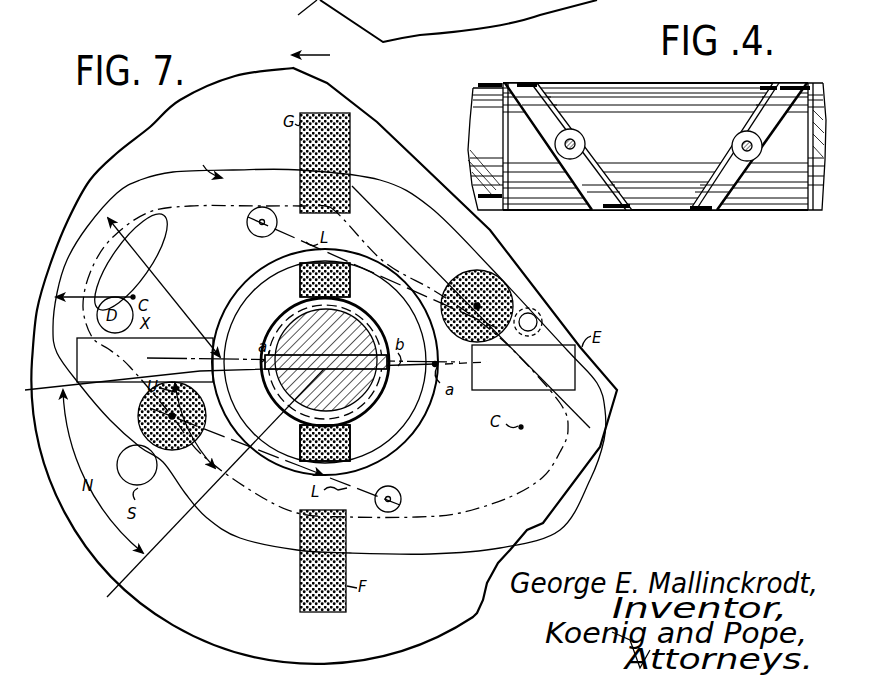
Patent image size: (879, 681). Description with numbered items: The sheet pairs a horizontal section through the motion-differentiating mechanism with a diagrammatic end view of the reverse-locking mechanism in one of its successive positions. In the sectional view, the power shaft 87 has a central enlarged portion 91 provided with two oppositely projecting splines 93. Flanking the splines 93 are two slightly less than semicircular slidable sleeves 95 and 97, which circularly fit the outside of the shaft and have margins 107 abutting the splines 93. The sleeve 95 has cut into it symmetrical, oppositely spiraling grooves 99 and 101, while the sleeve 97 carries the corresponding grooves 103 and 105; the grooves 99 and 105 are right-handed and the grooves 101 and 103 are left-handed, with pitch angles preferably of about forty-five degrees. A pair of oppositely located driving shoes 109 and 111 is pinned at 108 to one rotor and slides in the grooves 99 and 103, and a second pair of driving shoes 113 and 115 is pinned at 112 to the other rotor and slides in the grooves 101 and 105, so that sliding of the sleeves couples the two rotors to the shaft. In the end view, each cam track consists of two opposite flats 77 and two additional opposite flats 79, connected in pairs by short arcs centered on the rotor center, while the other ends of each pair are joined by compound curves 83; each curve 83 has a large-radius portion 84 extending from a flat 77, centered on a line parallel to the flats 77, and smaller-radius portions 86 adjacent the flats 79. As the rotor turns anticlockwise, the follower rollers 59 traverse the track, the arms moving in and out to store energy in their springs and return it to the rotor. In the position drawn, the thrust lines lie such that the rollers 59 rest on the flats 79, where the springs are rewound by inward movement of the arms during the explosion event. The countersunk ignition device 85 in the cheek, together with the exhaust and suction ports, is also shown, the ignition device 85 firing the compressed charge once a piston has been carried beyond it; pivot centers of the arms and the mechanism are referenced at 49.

In FIG. 7, the pivot bearing 49 is at (258, 230).
In FIG. 7, the follower rollers 59 is at (505, 288).
In FIG. 7, the flats 77 is at (278, 178).
In FIG. 7, the additional opposite flats 79 is at (478, 255).
In FIG. 7, the compound curves 83 is at (208, 162).
In FIG. 7, the large-radius portion of compound curve 84 is at (112, 211).
In FIG. 7, the ignition device 85 is at (541, 318).
In FIG. 7, the small-radius portions of compound curve 86 is at (57, 320).
In FIG. 7, the power shaft 87 is at (306, 332).
In FIG. 4, the power shaft 87 is at (487, 143).
In FIG. 7, the central enlarged portion of the shaft 91 is at (282, 327).
In FIG. 4, the central enlarged portion of the shaft 91 is at (480, 105).
In FIG. 7, the splines 93 is at (288, 340).
In FIG. 4, the splines 93 is at (498, 84).
In FIG. 7, the slidable sleeve 95 is at (362, 306).
In FIG. 4, the slidable sleeve 95 is at (668, 141).
In FIG. 7, the slidable sleeve 97 is at (380, 386).
In FIG. 7, the spiraling groove 99 is at (372, 312).
In FIG. 4, the spiraling groove 99 is at (546, 123).
In FIG. 7, the spiraling groove 101 is at (349, 361).
In FIG. 4, the spiraling groove 101 is at (784, 124).
In FIG. 7, the spiraling groove 103 is at (350, 424).
In FIG. 7, the spiraling groove 105 is at (357, 443).
In FIG. 7, the margins 107 is at (389, 346).
In FIG. 4, the pin 108 is at (577, 147).
In FIG. 7, the driving shoe 109 is at (305, 289).
In FIG. 4, the driving shoe 109 is at (572, 130).
In FIG. 7, the driving shoe 111 is at (383, 443).
In FIG. 4, the pin 112 is at (735, 148).
In FIG. 7, the driving shoe 113 is at (297, 341).
In FIG. 4, the driving shoe 113 is at (750, 124).
In FIG. 7, the driving shoe 115 is at (362, 385).